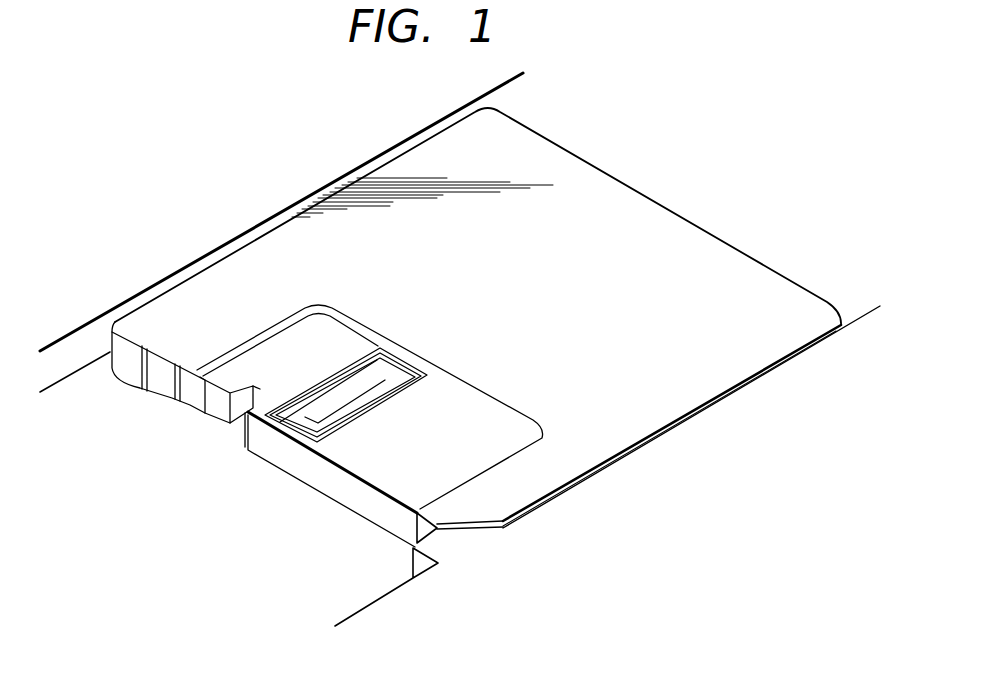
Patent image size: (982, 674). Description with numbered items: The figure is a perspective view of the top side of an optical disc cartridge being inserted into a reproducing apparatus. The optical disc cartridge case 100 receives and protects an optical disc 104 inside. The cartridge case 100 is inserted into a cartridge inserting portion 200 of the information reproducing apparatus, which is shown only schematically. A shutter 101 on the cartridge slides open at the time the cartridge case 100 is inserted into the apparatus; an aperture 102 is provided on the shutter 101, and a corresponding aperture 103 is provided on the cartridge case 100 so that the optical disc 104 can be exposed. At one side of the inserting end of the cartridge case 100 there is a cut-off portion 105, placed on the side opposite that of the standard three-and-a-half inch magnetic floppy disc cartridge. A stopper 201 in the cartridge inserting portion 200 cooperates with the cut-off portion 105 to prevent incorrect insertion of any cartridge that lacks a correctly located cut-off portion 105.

The optical disc cartridge case 100 is at (698, 258).
The shutter 101 is at (382, 462).
The aperture 102 is at (288, 437).
The aperture 103 is at (345, 380).
The optical disc 104 is at (387, 382).
The cut-off portion 105 is at (473, 518).
The cartridge inserting portion 200 is at (210, 217).
The stopper 201 is at (445, 540).